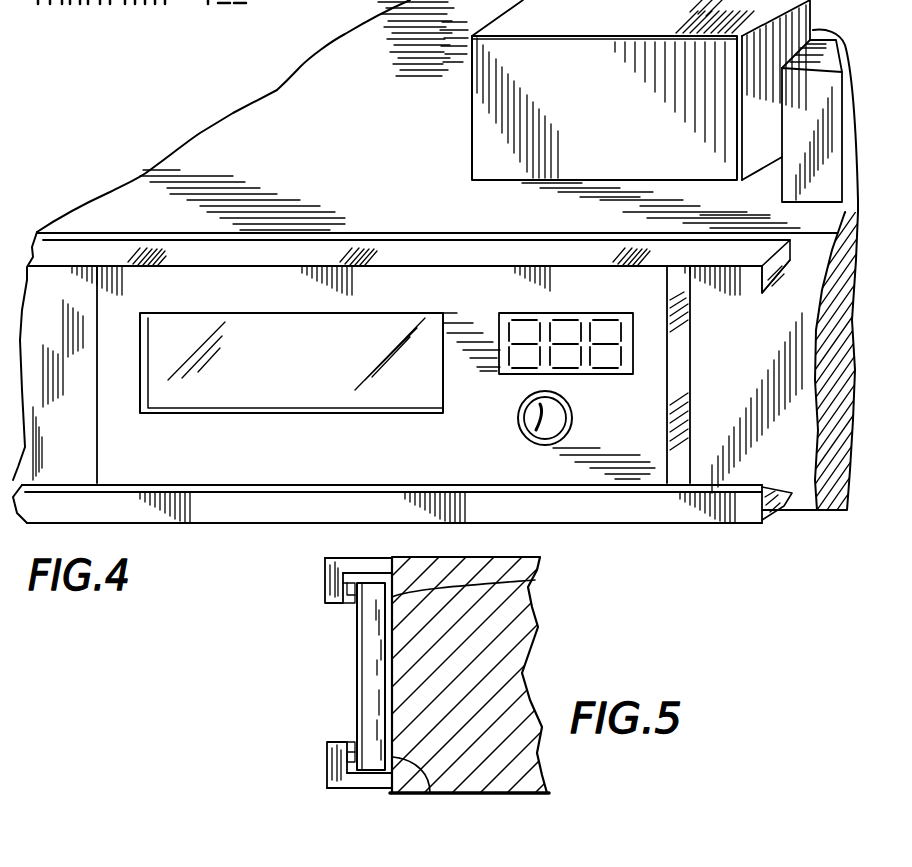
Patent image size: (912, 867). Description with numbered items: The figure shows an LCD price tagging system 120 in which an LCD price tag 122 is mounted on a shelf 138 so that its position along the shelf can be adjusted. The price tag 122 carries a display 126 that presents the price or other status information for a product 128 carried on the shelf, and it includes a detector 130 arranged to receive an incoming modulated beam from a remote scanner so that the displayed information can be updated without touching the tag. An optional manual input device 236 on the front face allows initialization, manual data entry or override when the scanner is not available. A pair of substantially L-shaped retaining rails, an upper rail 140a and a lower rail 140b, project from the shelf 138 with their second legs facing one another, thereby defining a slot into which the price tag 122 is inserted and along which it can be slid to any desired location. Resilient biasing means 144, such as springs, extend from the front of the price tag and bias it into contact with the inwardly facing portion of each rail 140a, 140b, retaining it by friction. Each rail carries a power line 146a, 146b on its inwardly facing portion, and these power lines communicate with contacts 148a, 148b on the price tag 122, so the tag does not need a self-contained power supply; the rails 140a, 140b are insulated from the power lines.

In FIG. 4, the LCD price tagging system 120 is at (206, 533).
In FIG. 4, the LCD price tag 122 is at (363, 462).
In FIG. 5, the LCD price tag 122 is at (355, 662).
In FIG. 4, the display 126 is at (193, 397).
In FIG. 4, the product 128 is at (620, 125).
In FIG. 4, the detector 130 is at (522, 424).
In FIG. 4, the shelf 138 is at (323, 157).
In FIG. 5, the shelf 138 is at (538, 615).
In FIG. 4, the upper rail 140a is at (749, 282).
In FIG. 5, the upper rail 140a is at (325, 581).
In FIG. 4, the lower rail 140b is at (743, 502).
In FIG. 5, the lower rail 140b is at (327, 773).
In FIG. 5, the resilient biasing means 144 is at (535, 580).
In FIG. 5, the power line 146a is at (353, 603).
In FIG. 5, the power line 146b is at (355, 748).
In FIG. 5, the contact 148a is at (355, 607).
In FIG. 5, the contact 148b is at (355, 740).
In FIG. 4, the manual input device 236 is at (603, 375).